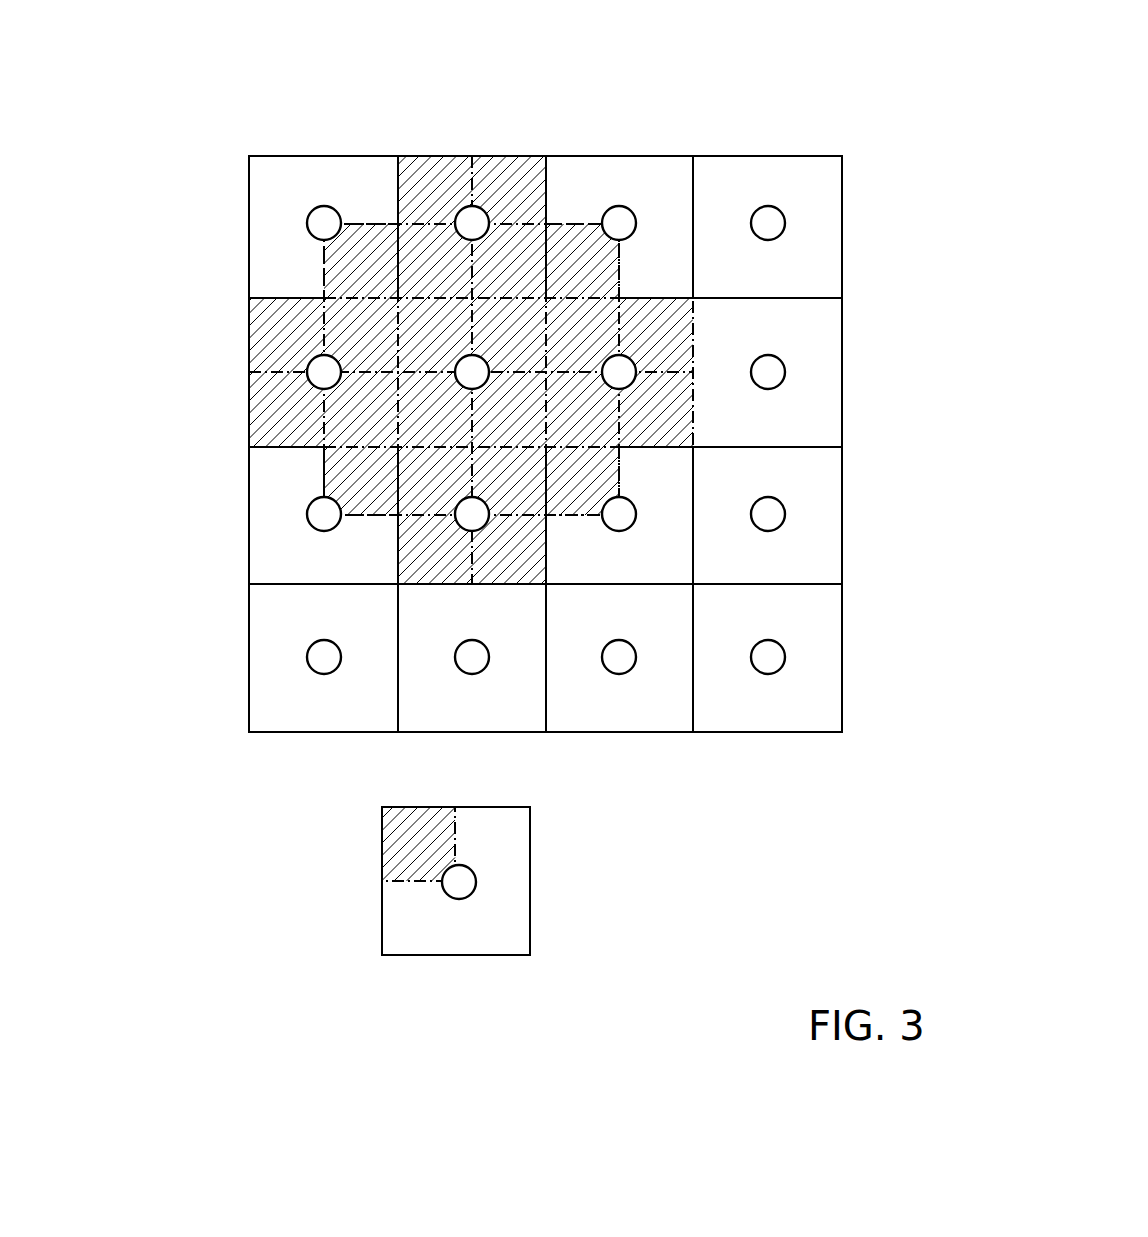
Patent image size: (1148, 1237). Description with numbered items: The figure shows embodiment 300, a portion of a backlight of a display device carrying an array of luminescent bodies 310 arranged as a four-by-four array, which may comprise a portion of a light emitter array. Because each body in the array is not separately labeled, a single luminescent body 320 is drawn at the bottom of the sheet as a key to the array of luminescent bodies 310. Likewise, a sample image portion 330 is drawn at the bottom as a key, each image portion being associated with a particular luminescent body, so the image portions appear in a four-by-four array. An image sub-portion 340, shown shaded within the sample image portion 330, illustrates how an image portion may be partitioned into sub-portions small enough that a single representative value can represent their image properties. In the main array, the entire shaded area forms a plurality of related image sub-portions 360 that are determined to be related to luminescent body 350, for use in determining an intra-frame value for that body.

The embodiment 300 is at (192, 77).
The array of luminescent bodies 310 is at (208, 150).
The luminescent body 320 is at (468, 897).
The image portion 330 is at (530, 878).
The image sub-portion 340 is at (382, 840).
The luminescent body 350 is at (470, 374).
The plurality of related image sub-portions 360 is at (488, 157).